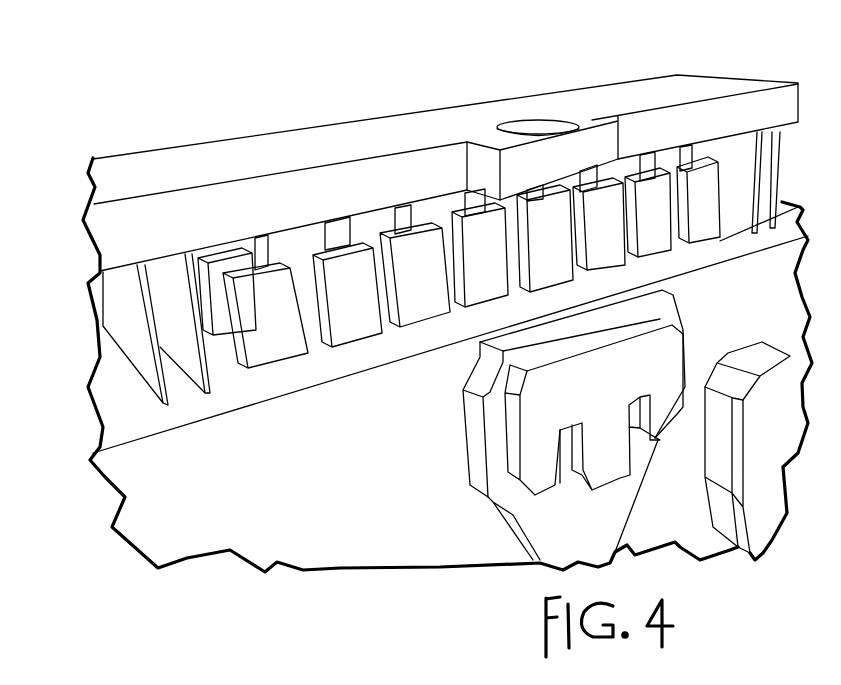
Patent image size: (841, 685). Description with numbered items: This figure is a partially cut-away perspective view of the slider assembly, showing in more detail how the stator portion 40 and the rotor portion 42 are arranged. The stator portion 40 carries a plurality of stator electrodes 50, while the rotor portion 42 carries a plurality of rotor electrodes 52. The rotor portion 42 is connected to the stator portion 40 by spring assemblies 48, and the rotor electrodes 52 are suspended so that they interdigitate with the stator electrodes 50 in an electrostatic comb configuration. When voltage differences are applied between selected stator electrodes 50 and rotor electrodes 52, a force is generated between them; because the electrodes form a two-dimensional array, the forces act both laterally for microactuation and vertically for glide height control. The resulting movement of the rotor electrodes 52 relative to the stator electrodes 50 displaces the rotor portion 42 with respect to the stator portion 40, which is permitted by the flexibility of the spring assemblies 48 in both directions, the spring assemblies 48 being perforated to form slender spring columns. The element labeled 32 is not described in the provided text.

The disc 32 is at (533, 126).
The stator portion 40 is at (122, 477).
The rotor portion 42 is at (132, 223).
The spring assemblies 48 is at (123, 313).
The stator electrodes 50 is at (272, 348).
The rotor electrodes 52 is at (432, 212).